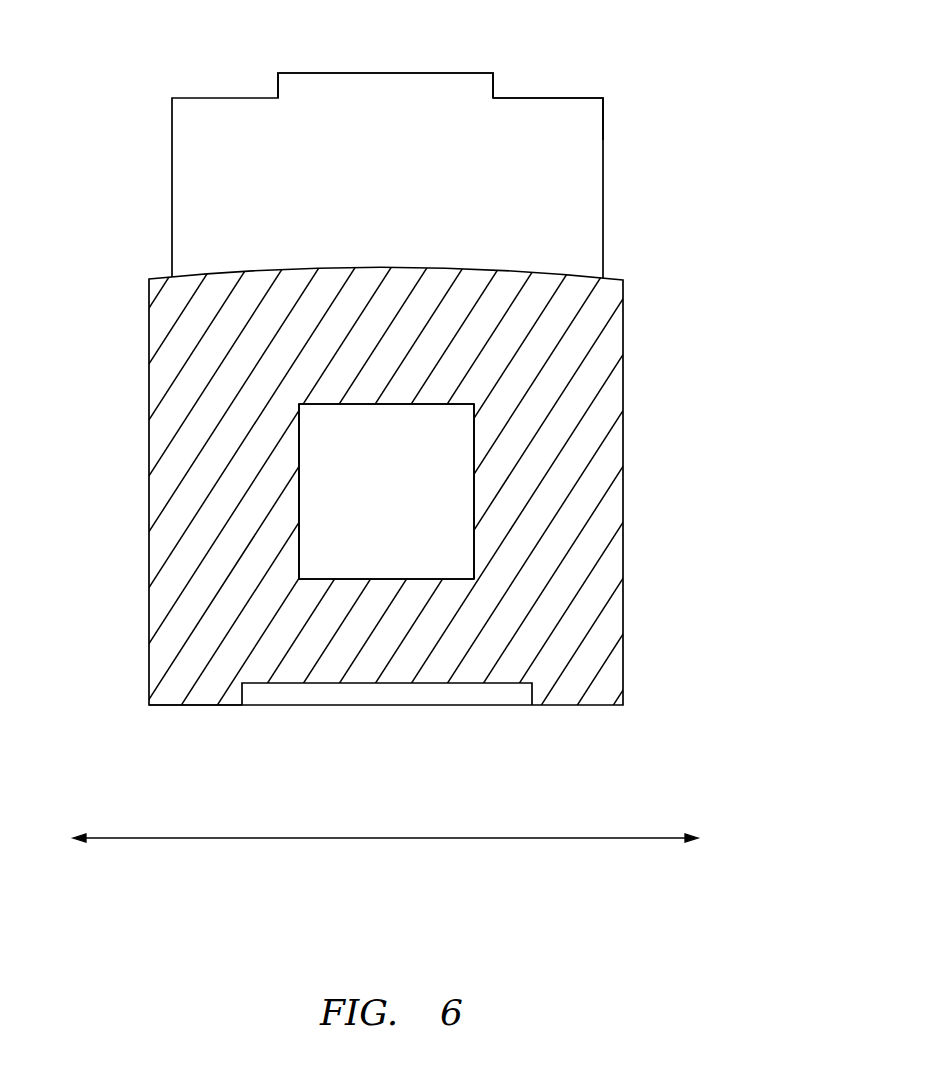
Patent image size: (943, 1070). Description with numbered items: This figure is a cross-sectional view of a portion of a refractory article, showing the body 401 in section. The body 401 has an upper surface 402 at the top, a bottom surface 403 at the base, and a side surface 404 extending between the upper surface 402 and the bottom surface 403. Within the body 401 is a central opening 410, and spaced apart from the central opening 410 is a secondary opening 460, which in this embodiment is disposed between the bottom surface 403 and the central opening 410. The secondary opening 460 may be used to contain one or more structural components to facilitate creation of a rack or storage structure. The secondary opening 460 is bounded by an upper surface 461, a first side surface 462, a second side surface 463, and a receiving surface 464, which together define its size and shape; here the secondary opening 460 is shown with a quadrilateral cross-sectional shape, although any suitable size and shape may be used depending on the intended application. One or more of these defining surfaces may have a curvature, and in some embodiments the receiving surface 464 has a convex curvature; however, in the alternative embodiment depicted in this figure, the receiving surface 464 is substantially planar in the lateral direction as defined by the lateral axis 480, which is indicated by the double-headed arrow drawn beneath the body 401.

The body 401 is at (603, 98).
The upper surface 402 is at (534, 88).
The bottom surface 403 is at (164, 722).
The side surface 404 is at (623, 335).
The central opening 410 is at (568, 197).
The secondary opening 460 is at (452, 471).
The upper surface 461 is at (326, 404).
The first side surface 462 is at (299, 516).
The second side surface 463 is at (474, 516).
The receiving surface 464 is at (447, 578).
The lateral axis 480 is at (458, 840).